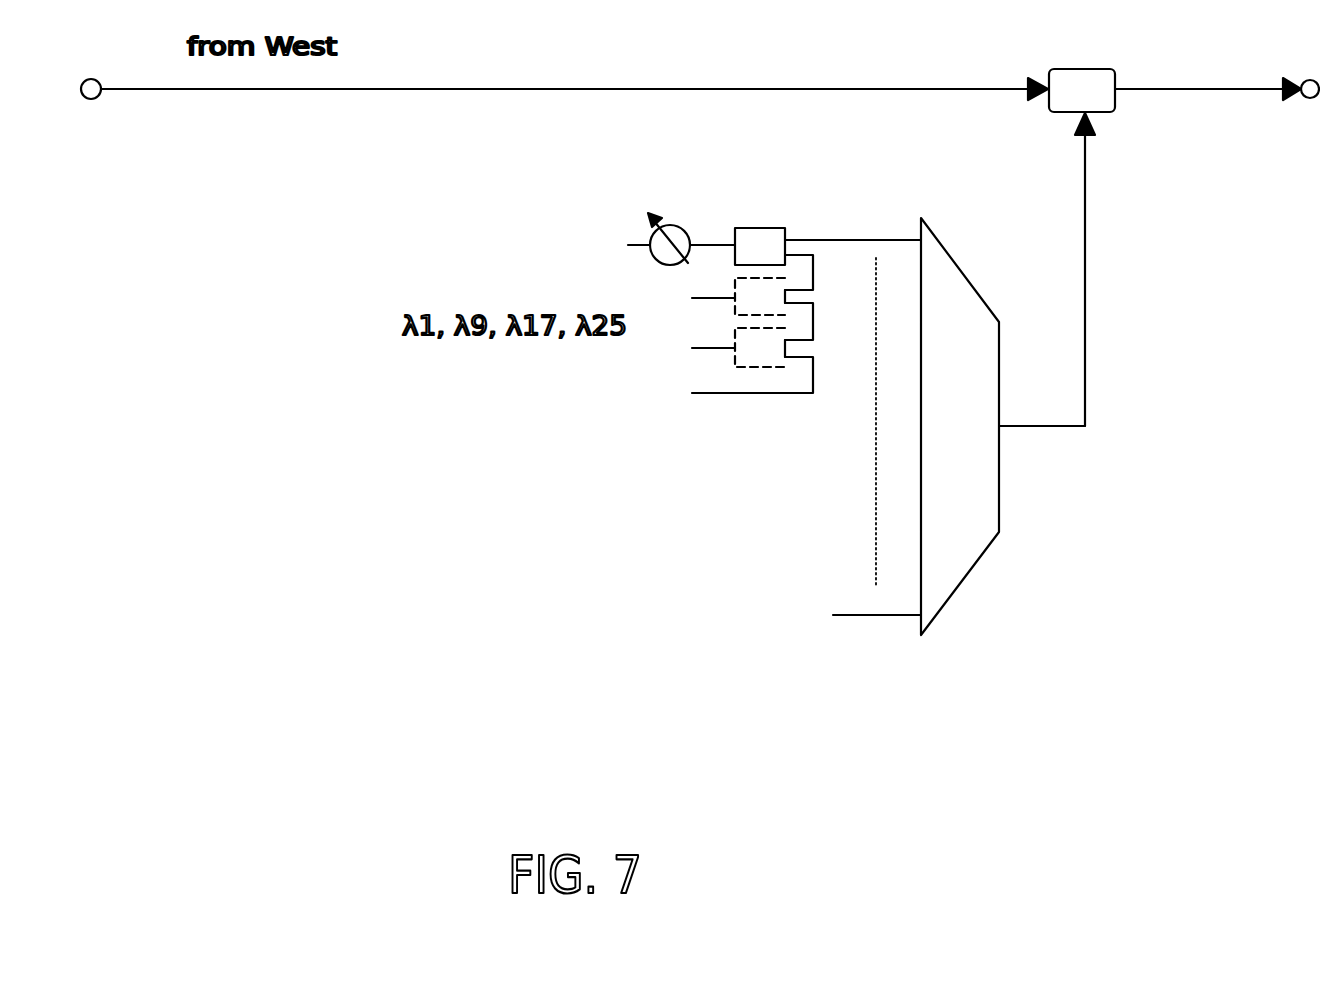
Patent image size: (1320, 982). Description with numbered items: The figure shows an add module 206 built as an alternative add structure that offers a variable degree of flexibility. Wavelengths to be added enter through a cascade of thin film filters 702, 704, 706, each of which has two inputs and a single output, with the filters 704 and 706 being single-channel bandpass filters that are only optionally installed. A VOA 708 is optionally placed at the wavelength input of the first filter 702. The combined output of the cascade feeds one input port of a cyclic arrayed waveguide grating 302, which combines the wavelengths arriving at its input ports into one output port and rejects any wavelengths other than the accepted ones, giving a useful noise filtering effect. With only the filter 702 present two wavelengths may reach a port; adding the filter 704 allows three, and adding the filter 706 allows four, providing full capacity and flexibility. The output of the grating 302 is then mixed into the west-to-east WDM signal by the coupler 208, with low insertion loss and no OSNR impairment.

The coupler 208 is at (1098, 82).
The cyclic arrayed waveguide grating 302 is at (962, 291).
The VOA 708 is at (680, 240).
The thin film filter 702 is at (785, 228).
The thin film filter 704 is at (788, 279).
The thin film filter 706 is at (788, 329).
The add module 206 is at (961, 810).